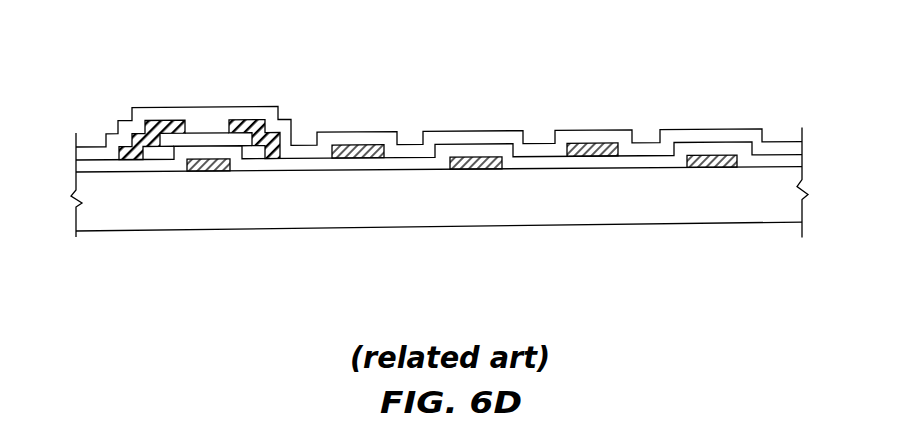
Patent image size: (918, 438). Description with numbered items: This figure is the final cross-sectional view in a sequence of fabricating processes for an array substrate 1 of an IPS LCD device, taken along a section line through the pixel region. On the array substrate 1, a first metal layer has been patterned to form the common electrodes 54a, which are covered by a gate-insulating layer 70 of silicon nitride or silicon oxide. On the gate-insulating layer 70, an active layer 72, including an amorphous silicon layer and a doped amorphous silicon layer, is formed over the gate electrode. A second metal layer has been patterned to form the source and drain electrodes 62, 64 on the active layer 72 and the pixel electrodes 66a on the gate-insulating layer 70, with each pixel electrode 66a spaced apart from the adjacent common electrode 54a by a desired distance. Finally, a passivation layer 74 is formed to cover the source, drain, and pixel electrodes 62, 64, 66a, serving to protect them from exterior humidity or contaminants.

The array substrate 1 is at (425, 210).
The common electrodes 54a is at (475, 159).
The source electrode 62 is at (168, 121).
The drain electrode 64 is at (255, 121).
The pixel electrodes 66a is at (358, 147).
The gate-insulating layer 70 is at (545, 168).
The active layer 72 is at (164, 150).
The passivation layer 74 is at (517, 134).